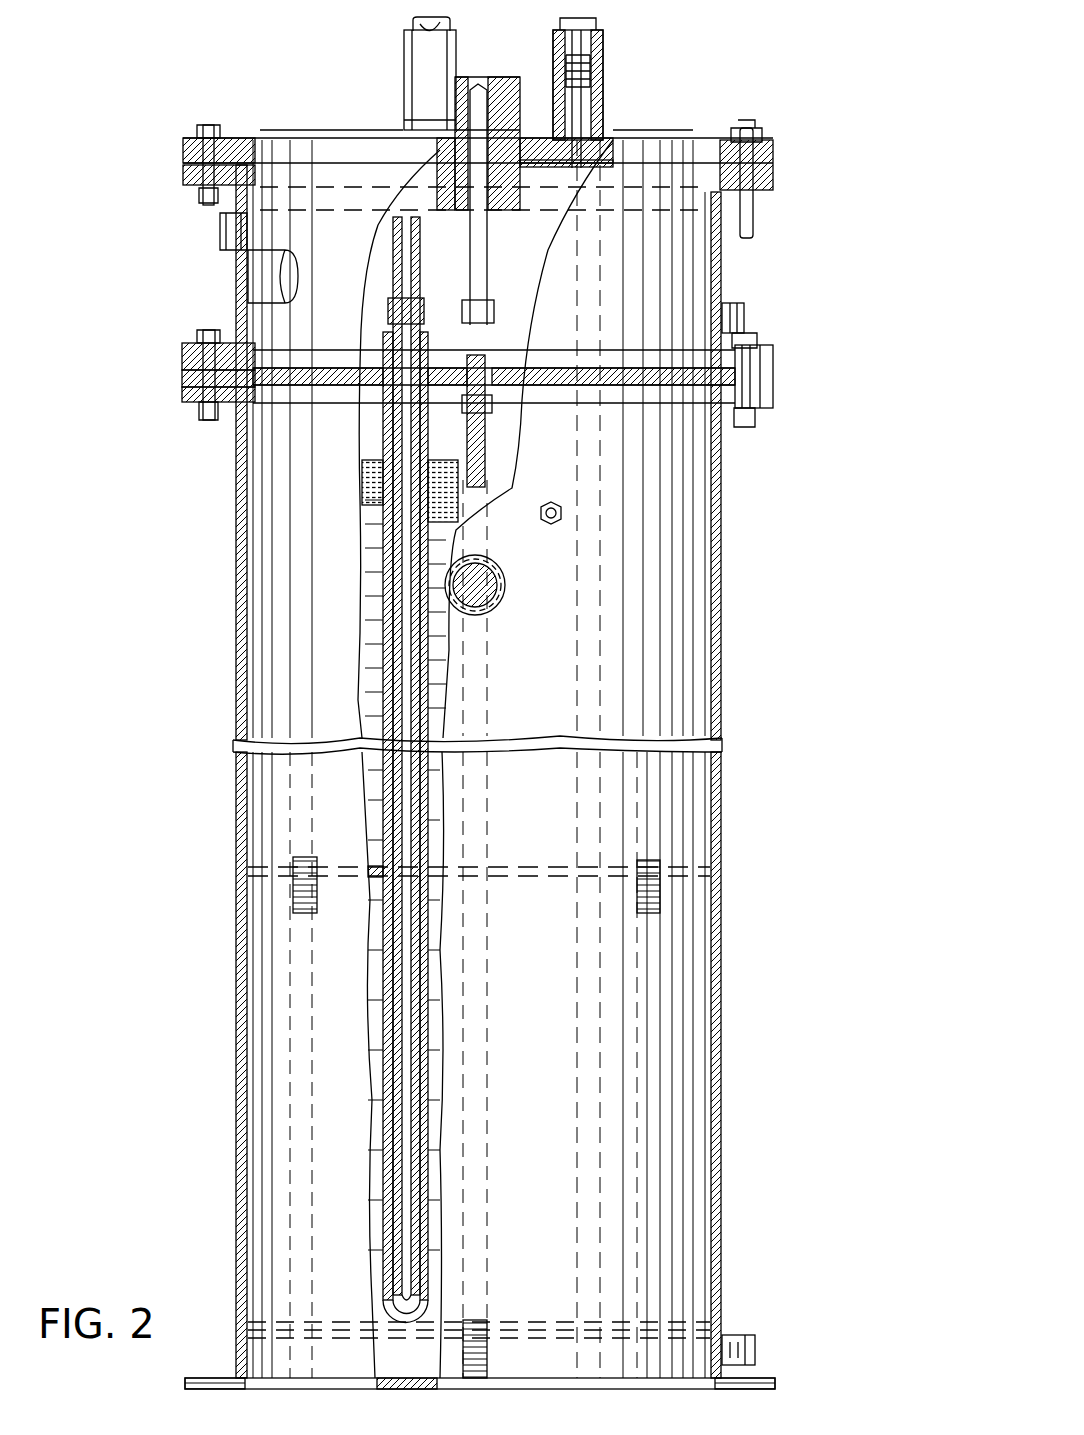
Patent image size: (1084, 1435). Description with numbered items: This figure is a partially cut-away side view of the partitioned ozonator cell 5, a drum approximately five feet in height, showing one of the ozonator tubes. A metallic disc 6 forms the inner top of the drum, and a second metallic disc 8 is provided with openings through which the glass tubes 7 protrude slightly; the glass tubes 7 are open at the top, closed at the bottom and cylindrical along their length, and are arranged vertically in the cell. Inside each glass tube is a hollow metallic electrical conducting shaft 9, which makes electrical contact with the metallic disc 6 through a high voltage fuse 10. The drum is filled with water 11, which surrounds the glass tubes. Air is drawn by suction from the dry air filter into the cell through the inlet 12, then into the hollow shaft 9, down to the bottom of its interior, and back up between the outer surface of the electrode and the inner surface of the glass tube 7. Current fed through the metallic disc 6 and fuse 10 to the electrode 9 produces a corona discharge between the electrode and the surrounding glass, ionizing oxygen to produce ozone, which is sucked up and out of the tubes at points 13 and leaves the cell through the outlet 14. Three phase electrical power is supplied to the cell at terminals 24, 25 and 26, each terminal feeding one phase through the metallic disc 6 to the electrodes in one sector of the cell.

The ozonator cell 5 is at (720, 518).
The metallic disc 6 is at (596, 162).
The glass tubes 7 is at (383, 553).
The metallic disc 8 is at (775, 386).
The hollow metallic electrical conducting shaft 9 is at (358, 474).
The high voltage fuse 10 is at (422, 216).
The water 11 is at (446, 470).
The inlet 12 is at (224, 262).
The points of the tubes 13 is at (430, 322).
The outlet 14 is at (746, 313).
The terminal 24 is at (403, 68).
The terminal 25 is at (452, 36).
The terminal 26 is at (610, 24).